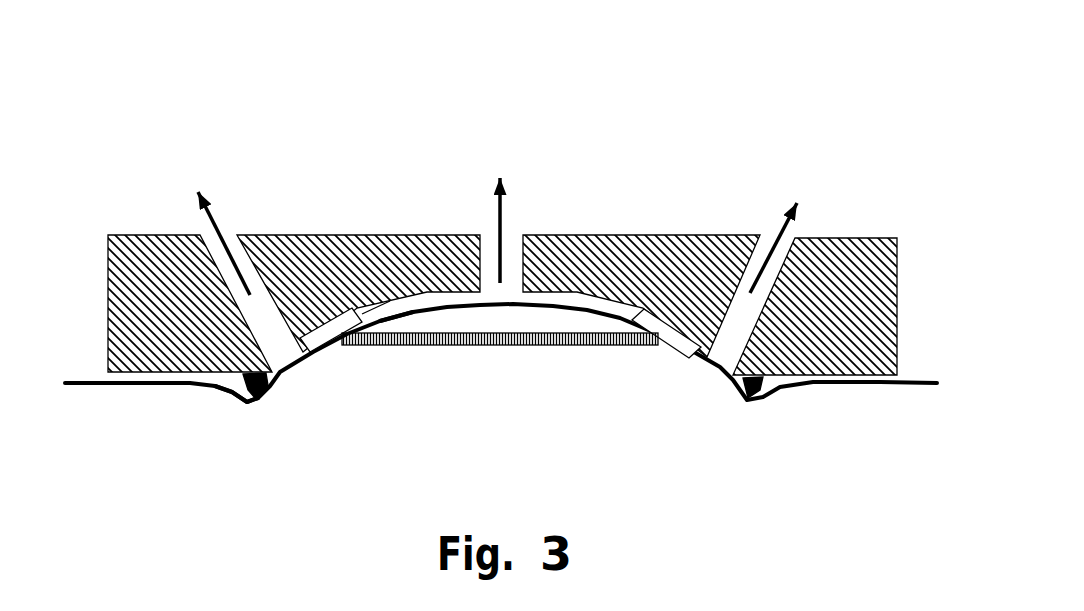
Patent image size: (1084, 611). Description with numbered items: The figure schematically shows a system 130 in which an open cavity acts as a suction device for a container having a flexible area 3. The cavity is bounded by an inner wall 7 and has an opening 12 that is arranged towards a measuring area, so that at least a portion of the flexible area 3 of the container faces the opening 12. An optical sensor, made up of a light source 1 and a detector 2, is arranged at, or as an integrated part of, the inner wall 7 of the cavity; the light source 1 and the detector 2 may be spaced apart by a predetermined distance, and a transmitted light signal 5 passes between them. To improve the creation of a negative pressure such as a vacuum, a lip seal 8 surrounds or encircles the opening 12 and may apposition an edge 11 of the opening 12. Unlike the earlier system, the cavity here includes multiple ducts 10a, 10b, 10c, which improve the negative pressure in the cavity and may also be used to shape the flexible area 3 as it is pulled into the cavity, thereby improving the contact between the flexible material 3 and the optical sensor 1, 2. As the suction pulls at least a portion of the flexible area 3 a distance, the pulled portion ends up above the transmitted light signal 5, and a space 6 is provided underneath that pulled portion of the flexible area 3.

The system 130 is at (143, 125).
The light source 1 is at (340, 302).
The detector 2 is at (668, 293).
The flexible area 3 is at (187, 395).
The transmitted light signal 5 is at (447, 347).
The space 6 is at (520, 370).
The inner wall 7 is at (383, 303).
The lip seal 8 is at (245, 381).
The edge 11 is at (257, 397).
The opening 12 is at (665, 430).
The duct 10a is at (807, 205).
The duct 10b is at (523, 217).
The duct 10c is at (187, 212).